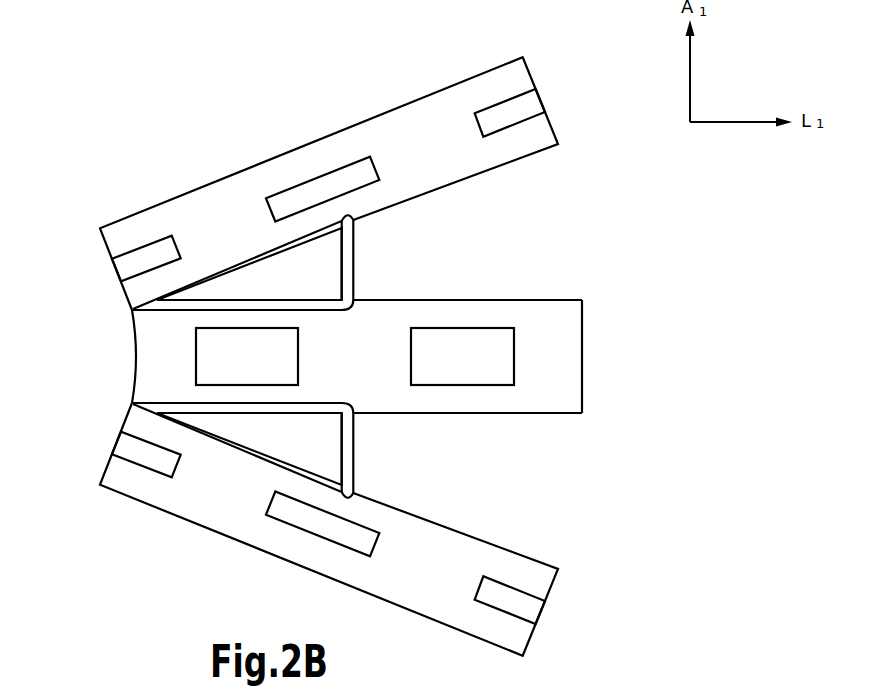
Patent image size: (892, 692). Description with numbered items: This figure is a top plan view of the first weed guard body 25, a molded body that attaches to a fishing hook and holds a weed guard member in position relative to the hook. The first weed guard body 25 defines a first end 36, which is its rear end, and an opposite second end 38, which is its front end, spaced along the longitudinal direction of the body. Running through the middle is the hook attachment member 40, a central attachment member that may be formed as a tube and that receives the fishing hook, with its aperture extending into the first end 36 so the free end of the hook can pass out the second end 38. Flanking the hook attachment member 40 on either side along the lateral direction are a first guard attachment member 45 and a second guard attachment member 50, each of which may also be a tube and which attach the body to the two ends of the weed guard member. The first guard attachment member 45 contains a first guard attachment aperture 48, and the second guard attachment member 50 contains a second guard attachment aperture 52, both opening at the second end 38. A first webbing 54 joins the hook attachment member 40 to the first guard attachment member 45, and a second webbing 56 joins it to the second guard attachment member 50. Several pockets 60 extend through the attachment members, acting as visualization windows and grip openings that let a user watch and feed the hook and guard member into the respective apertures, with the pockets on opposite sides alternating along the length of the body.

The first weed guard body 25 is at (211, 132).
The first end 36 is at (133, 329).
The second end 38 is at (582, 330).
The hook attachment member 40 is at (445, 298).
The first guard attachment member 45 is at (415, 100).
The first guard attachment aperture 48 is at (287, 203).
The second guard attachment member 50 is at (385, 601).
The second guard attachment aperture 52 is at (303, 529).
The first webbing 54 is at (353, 262).
The second webbing 56 is at (353, 450).
The pockets 60 is at (145, 248).